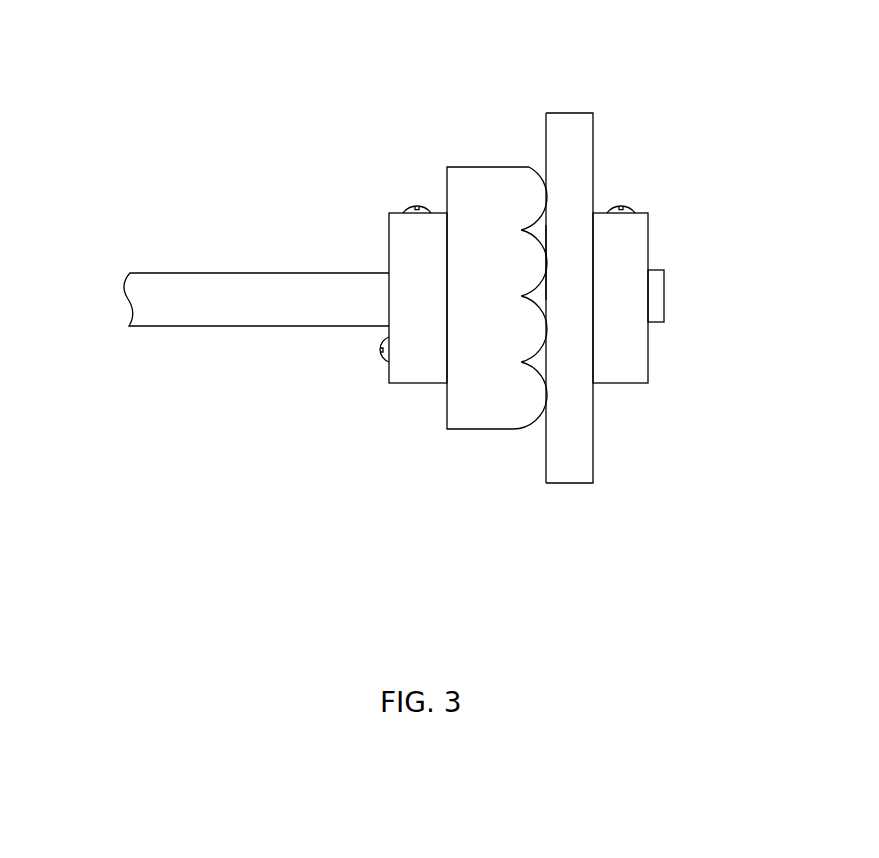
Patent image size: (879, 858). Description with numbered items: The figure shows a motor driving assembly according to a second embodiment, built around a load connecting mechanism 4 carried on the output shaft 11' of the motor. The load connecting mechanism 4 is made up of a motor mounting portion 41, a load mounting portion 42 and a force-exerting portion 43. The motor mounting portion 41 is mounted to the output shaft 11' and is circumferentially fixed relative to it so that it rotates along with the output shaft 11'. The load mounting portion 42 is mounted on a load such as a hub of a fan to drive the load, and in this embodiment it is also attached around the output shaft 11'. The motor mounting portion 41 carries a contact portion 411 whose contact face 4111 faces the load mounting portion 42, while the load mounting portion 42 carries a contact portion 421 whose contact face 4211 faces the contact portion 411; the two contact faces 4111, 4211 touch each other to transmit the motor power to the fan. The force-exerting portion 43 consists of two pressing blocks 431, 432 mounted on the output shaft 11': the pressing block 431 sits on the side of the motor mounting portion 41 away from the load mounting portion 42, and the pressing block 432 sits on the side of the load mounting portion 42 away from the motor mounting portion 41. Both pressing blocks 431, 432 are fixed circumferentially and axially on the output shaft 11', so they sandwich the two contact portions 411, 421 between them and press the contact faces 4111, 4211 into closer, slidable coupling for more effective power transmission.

The output shaft 11' is at (221, 261).
The load connecting mechanism 4 is at (377, 225).
The motor mounting portion 41 is at (460, 200).
The contact portion 411 is at (523, 198).
The contact face 4111 is at (536, 168).
The load mounting portion 42 is at (570, 125).
The contact portion 421 is at (567, 212).
The contact face 4211 is at (547, 244).
The force-exerting portion 43 is at (720, 533).
The pressing block 431 is at (402, 368).
The pressing block 432 is at (625, 368).